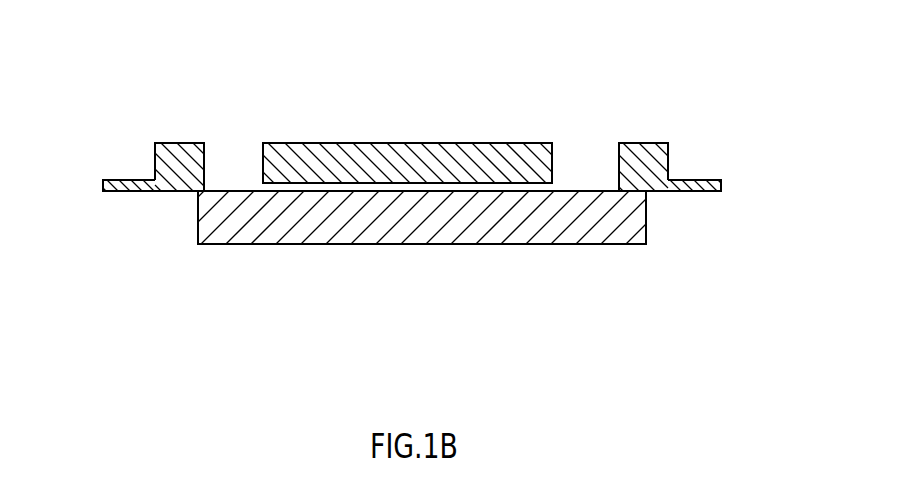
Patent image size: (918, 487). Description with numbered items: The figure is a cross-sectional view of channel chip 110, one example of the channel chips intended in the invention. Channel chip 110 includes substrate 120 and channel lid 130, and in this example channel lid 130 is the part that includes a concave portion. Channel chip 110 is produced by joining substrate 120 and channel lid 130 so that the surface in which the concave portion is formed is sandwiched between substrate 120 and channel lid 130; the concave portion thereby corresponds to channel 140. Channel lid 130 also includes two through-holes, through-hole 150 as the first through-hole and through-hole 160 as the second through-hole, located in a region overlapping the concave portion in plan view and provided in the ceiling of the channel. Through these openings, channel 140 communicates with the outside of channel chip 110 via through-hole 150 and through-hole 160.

The channel chip 110 is at (705, 87).
The substrate 120 is at (568, 245).
The channel lid 130 is at (707, 192).
The channel 140 is at (470, 187).
The through-hole 150 is at (234, 155).
The through-hole 160 is at (571, 152).